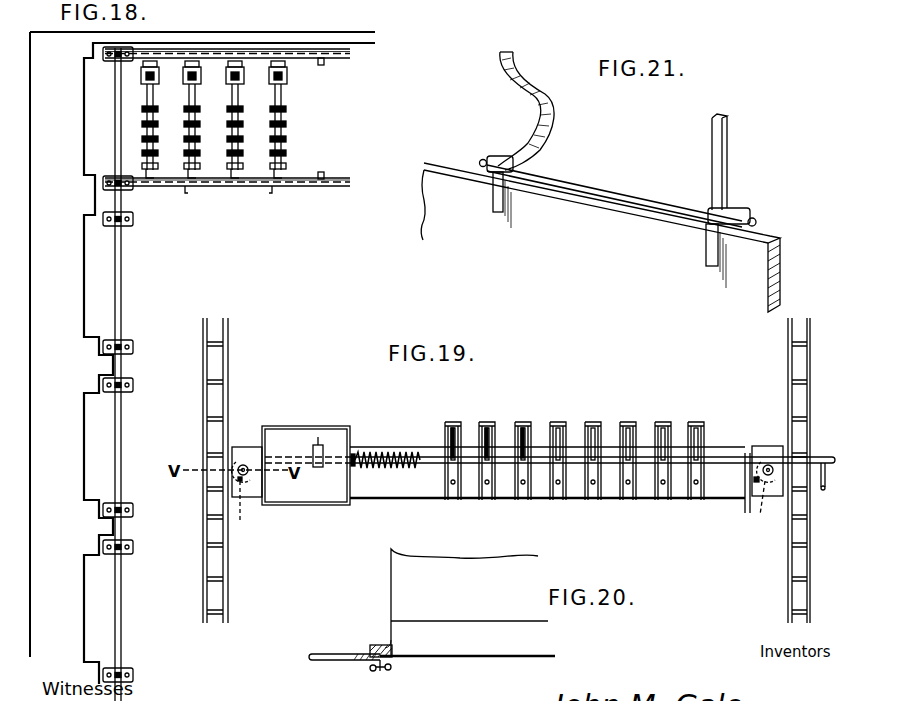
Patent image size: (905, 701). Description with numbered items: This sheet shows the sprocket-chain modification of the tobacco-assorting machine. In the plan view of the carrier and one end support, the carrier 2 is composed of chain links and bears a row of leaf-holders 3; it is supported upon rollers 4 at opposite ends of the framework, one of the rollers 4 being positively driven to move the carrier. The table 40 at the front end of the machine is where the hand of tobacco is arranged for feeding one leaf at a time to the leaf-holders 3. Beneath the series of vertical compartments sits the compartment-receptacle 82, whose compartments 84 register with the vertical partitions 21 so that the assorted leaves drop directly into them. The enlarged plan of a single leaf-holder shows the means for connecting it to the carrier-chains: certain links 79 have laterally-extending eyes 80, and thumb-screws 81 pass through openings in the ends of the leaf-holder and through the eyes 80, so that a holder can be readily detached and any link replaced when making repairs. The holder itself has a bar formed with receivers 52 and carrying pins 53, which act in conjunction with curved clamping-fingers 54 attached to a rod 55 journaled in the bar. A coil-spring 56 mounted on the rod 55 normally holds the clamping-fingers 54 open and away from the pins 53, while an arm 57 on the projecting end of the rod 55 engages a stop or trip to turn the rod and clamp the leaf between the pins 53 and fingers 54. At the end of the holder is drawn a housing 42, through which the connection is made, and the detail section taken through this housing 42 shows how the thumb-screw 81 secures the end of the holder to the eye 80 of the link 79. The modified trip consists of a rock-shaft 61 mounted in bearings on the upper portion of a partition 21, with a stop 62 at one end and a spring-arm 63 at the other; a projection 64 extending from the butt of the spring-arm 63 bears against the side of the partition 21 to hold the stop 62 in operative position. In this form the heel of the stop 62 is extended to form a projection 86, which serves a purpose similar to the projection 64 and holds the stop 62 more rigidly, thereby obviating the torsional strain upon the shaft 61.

In FIG. 18, the carrier 2 is at (358, 60).
In FIG. 19, the carrier 2 is at (229, 371).
In FIG. 18, the leaf-holders 3 is at (221, 119).
In FIG. 19, the leaf-holders 3 is at (547, 461).
In FIG. 20, the leaf-holders 3 is at (467, 642).
In FIG. 18, the rollers 4 is at (105, 66).
In FIG. 21, the vertical partitions 21 is at (600, 237).
In FIG. 18, the table 40 is at (202, 358).
In FIG. 19, the housing box 42 is at (292, 427).
In FIG. 20, the housing box 42 is at (469, 602).
In FIG. 19, the receivers 52 is at (558, 425).
In FIG. 19, the pins 53 is at (521, 486).
In FIG. 19, the clamping-fingers 54 is at (483, 432).
In FIG. 19, the rod 55 is at (723, 462).
In FIG. 19, the coil-spring 56 is at (406, 472).
In FIG. 18, the arm 57 is at (186, 193).
In FIG. 19, the arm 57 is at (836, 476).
In FIG. 21, the rock-shaft 61 is at (632, 191).
In FIG. 21, the stop 62 is at (732, 163).
In FIG. 21, the spring-arm 63 is at (536, 112).
In FIG. 21, the projection 64 is at (493, 195).
In FIG. 18, the links 79 is at (193, 49).
In FIG. 19, the links 79 is at (205, 482).
In FIG. 20, the links 79 is at (322, 653).
In FIG. 18, the eyes 80 is at (287, 52).
In FIG. 19, the eyes 80 is at (505, 507).
In FIG. 20, the eyes 80 is at (393, 661).
In FIG. 19, the thumb-screws 81 is at (244, 464).
In FIG. 20, the thumb-screws 81 is at (375, 672).
In FIG. 21, the compartment-receptacle 82 is at (575, 10).
In FIG. 18, the compartments 84 is at (289, 0).
In FIG. 21, the compartments 84 is at (482, 0).
In FIG. 21, the projection 86 is at (707, 250).